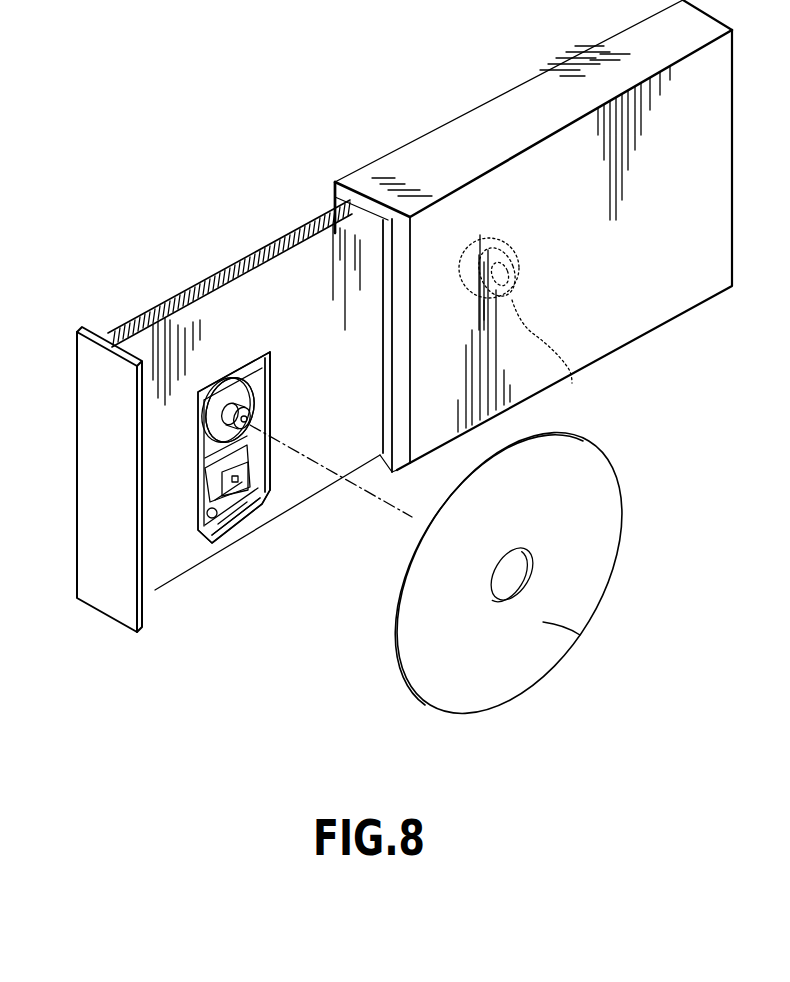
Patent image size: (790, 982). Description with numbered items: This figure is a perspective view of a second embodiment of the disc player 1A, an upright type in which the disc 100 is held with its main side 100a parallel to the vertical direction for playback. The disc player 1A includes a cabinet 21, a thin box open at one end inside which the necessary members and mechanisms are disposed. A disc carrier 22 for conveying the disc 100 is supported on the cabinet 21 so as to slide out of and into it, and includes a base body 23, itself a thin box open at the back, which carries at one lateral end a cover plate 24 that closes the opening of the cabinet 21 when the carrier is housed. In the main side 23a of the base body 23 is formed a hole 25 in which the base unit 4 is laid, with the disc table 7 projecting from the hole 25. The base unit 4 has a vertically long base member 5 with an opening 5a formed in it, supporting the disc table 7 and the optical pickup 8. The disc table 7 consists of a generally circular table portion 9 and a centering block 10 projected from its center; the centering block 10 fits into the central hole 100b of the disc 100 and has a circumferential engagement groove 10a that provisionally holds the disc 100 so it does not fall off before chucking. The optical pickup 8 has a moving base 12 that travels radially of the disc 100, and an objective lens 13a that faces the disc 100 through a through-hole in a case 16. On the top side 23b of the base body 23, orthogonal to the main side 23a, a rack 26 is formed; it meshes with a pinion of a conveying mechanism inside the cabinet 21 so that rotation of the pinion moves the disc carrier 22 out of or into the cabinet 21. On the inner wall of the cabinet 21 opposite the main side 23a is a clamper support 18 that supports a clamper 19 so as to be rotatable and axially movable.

The disc player 1A is at (337, 108).
The base unit 4 is at (265, 452).
The base member 5 is at (208, 548).
The opening 5a is at (210, 525).
The disc table 7 is at (245, 420).
The optical pickup 8 is at (275, 495).
The table portion 9 is at (228, 385).
The centering block 10 is at (238, 400).
The engagement groove 10a is at (207, 434).
The moving base 12 is at (210, 483).
The objective lens 13a is at (235, 487).
The case 16 is at (238, 540).
The clamper support 18 is at (548, 357).
The clamper 19 is at (487, 237).
The cabinet 21 is at (650, 312).
The disc carrier 22 is at (162, 592).
The base body 23 is at (337, 447).
The main side 23a is at (312, 472).
The top side 23b is at (110, 332).
The cover plate 24 is at (105, 598).
The hole 25 is at (271, 345).
The rack 26 is at (147, 312).
The disc 100 is at (578, 545).
The main side 100a is at (580, 635).
The central hole 100b is at (527, 558).